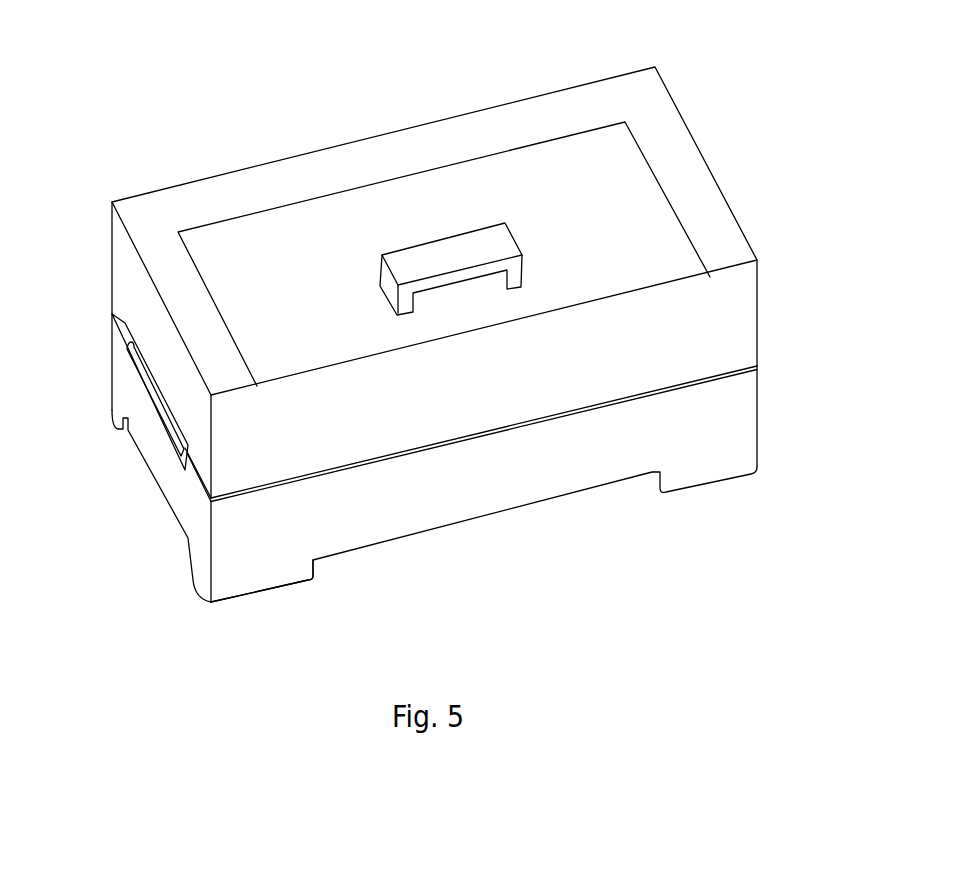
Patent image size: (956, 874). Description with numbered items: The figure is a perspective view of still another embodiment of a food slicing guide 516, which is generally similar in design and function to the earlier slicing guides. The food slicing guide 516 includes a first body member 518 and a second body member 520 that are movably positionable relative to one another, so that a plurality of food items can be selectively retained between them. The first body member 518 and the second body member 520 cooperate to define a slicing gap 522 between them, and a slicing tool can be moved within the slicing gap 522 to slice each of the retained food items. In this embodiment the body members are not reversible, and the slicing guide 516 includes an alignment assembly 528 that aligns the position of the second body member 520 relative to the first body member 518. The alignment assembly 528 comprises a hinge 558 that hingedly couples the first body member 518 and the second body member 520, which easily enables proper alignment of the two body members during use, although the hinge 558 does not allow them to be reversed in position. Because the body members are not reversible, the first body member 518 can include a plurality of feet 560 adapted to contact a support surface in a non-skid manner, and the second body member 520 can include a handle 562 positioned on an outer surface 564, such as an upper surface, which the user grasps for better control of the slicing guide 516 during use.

The food slicing guide 516 is at (214, 82).
The first body member 518 is at (742, 438).
The second body member 520 is at (733, 303).
The slicing gap 522 is at (762, 366).
The alignment assembly 528 is at (116, 338).
The hinge 558 is at (168, 432).
The feet 560 is at (290, 577).
The handle 562 is at (432, 261).
The outer surface 564 is at (656, 207).